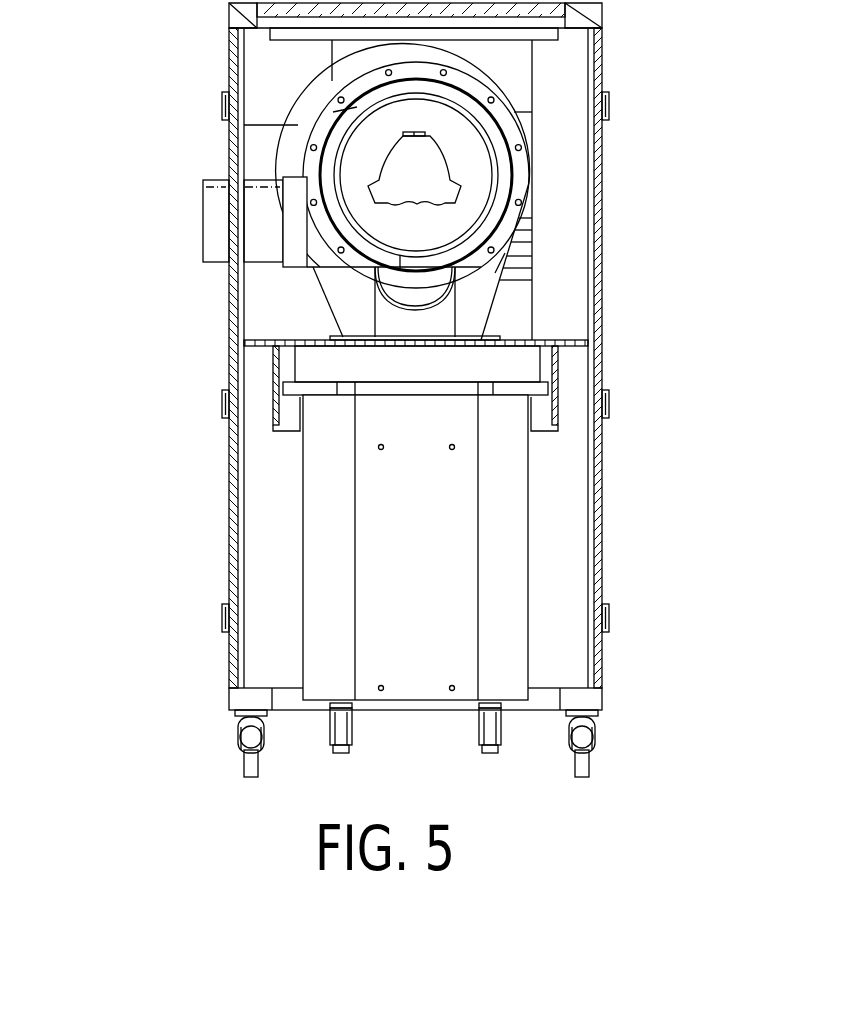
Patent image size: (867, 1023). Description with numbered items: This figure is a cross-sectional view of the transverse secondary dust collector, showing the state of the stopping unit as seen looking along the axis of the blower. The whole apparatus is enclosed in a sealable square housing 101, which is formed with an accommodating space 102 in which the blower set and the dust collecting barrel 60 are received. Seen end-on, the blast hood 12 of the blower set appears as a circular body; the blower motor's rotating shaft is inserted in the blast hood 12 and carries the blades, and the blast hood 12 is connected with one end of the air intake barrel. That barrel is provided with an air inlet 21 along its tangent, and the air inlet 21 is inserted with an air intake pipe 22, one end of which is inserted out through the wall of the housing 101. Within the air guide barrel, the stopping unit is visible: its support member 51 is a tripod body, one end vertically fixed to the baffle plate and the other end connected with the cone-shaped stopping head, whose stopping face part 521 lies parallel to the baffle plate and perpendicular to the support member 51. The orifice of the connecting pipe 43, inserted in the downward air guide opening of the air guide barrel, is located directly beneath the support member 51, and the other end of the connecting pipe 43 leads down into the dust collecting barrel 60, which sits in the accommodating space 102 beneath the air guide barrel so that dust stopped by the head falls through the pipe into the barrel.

The housing 101 is at (601, 56).
The accommodating space 102 is at (263, 63).
The blast hood 12 is at (488, 284).
The air inlet 21 is at (282, 237).
The air intake pipe 22 is at (212, 203).
The connecting pipe 43 is at (325, 293).
The support member 51 is at (453, 193).
The stopping face part 521 is at (470, 148).
The dust collecting barrel 60 is at (545, 454).